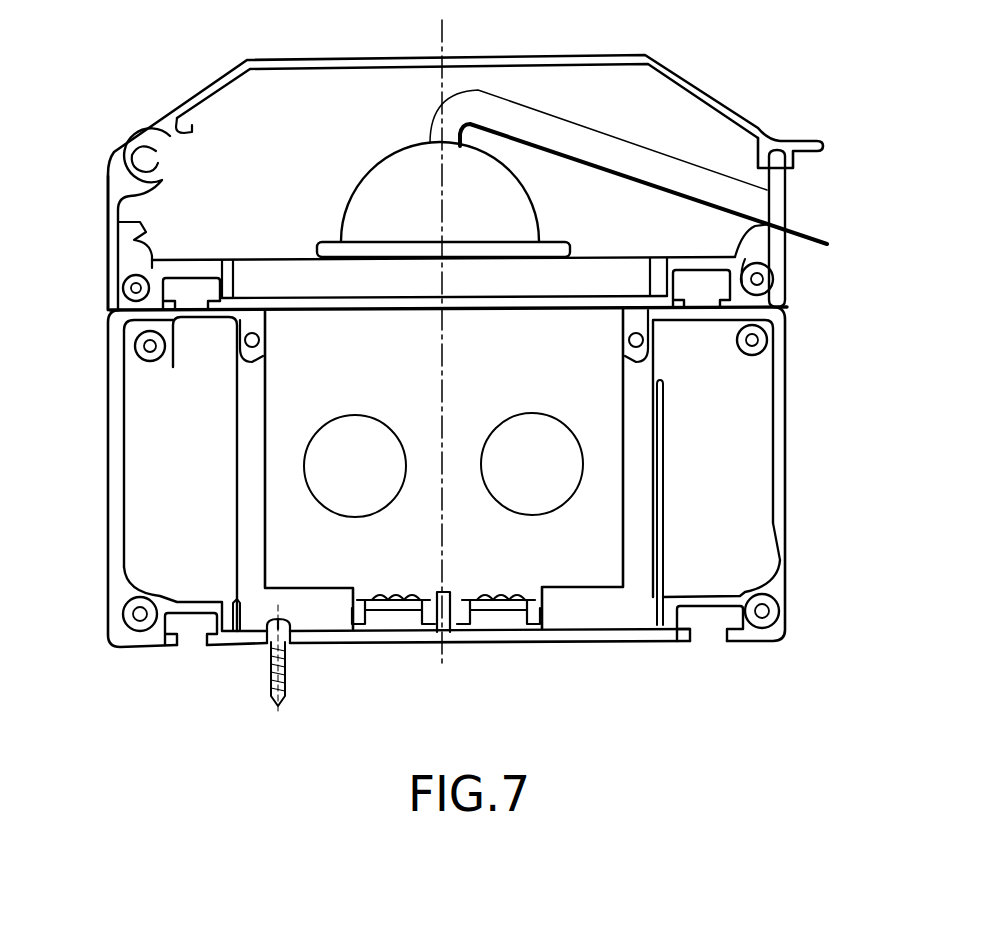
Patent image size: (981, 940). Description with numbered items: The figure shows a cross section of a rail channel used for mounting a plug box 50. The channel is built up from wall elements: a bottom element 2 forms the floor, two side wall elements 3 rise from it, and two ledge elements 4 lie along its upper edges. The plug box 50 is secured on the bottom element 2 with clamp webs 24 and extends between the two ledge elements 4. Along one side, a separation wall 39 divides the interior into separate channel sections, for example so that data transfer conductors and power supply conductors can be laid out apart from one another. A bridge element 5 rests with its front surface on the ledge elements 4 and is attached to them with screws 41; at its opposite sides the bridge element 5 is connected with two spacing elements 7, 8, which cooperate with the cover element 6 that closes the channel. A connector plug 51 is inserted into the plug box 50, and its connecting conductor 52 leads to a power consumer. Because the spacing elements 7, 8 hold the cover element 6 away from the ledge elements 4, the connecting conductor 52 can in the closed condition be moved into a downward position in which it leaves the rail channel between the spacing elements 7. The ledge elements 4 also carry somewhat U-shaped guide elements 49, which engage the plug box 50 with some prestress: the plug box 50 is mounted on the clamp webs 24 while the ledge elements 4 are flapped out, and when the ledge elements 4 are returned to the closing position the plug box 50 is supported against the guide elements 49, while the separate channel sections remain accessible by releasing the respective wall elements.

The bottom element 2 is at (317, 640).
The side wall elements 3 is at (783, 368).
The ledge elements 4 is at (200, 322).
The bridge element 5 is at (577, 297).
The cover element 6 is at (270, 61).
The spacing element 7 is at (782, 258).
The spacing element 8 is at (105, 214).
The clamp webs 24 is at (392, 615).
The separation wall 39 is at (661, 520).
The screws 41 is at (253, 323).
The guide elements 49 is at (637, 330).
The plug box 50 is at (597, 567).
The connector plug 51 is at (396, 174).
The connecting conductor 52 is at (802, 208).